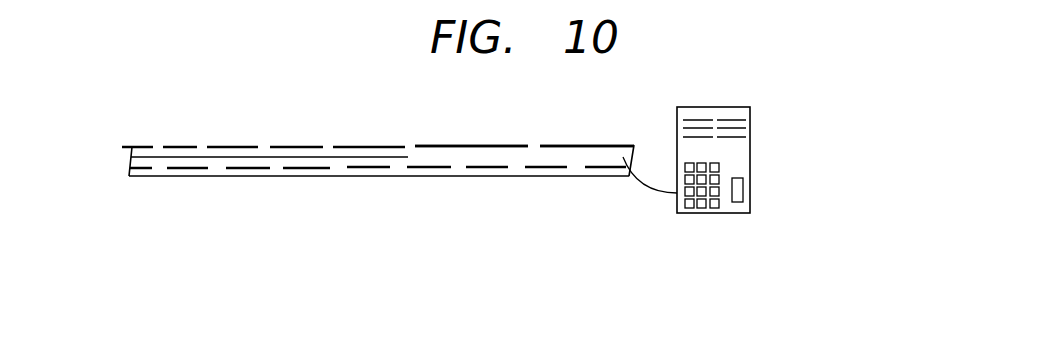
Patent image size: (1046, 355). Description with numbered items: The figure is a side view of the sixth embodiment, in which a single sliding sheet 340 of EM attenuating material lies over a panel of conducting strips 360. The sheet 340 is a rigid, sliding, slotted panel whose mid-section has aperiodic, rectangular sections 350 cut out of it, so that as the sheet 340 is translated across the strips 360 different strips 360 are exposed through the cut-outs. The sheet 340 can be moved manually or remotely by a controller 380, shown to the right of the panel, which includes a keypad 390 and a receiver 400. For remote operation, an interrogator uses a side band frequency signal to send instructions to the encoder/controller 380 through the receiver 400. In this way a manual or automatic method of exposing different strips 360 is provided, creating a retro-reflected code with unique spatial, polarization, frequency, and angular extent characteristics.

The sliding sheet 340 is at (213, 147).
The rectangular sections 350 is at (580, 146).
The conducting strips 360 is at (305, 168).
The controller 380 is at (742, 152).
The keypad 390 is at (687, 210).
The receiver 400 is at (774, 177).